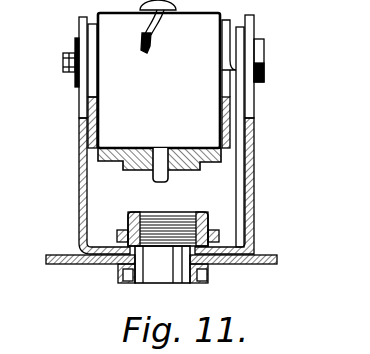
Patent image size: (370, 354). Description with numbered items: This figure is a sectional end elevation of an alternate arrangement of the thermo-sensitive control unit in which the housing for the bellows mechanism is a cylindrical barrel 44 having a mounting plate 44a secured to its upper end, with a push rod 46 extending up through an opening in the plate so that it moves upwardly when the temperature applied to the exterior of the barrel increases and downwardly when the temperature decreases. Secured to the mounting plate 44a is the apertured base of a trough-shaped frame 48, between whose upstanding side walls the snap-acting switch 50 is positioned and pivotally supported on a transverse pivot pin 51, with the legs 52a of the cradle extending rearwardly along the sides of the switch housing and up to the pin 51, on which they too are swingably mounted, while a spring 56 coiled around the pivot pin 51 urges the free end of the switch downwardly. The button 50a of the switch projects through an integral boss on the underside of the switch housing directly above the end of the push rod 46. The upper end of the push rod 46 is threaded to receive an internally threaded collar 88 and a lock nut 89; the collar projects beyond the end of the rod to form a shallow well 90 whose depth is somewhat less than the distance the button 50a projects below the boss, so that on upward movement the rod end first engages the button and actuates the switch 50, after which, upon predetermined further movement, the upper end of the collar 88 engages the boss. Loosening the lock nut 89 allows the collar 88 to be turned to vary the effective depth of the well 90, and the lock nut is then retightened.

The cylindrical barrel 44 is at (209, 277).
The mounting plate 44a is at (49, 255).
The push rod 46 is at (174, 283).
The trough-shaped frame 48 is at (91, 252).
The snap-acting switch 50 is at (159, 74).
The button 50a is at (159, 150).
The pivot pin 51 is at (66, 60).
The legs 52a is at (92, 106).
The spring 56 is at (238, 162).
The collar 88 is at (196, 216).
The lock nut 89 is at (211, 234).
The shallow well 90 is at (168, 213).